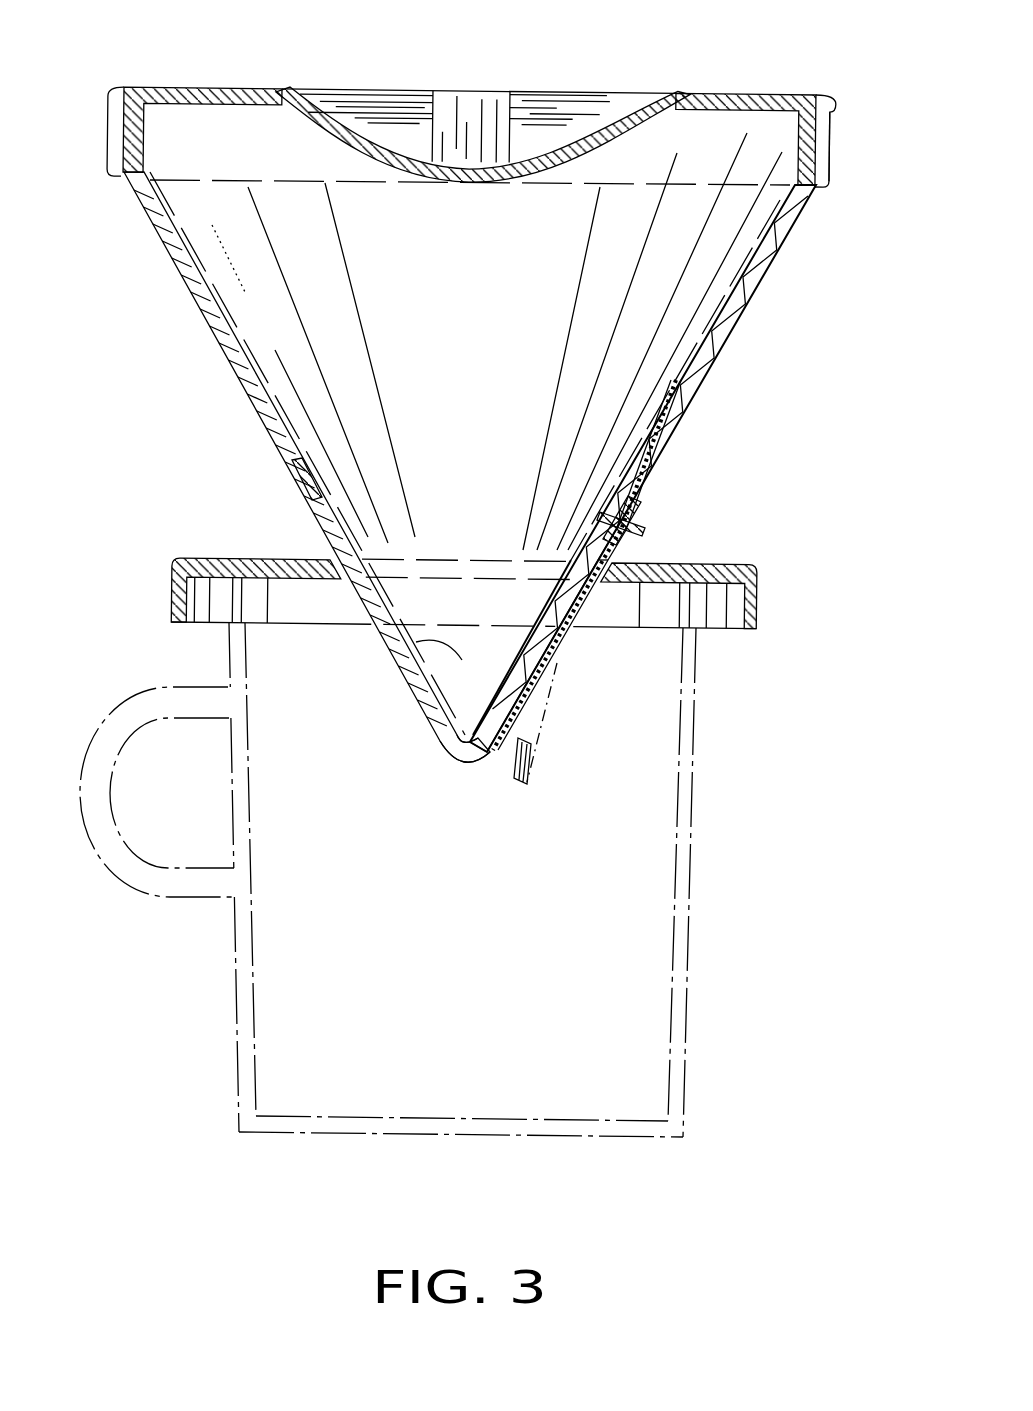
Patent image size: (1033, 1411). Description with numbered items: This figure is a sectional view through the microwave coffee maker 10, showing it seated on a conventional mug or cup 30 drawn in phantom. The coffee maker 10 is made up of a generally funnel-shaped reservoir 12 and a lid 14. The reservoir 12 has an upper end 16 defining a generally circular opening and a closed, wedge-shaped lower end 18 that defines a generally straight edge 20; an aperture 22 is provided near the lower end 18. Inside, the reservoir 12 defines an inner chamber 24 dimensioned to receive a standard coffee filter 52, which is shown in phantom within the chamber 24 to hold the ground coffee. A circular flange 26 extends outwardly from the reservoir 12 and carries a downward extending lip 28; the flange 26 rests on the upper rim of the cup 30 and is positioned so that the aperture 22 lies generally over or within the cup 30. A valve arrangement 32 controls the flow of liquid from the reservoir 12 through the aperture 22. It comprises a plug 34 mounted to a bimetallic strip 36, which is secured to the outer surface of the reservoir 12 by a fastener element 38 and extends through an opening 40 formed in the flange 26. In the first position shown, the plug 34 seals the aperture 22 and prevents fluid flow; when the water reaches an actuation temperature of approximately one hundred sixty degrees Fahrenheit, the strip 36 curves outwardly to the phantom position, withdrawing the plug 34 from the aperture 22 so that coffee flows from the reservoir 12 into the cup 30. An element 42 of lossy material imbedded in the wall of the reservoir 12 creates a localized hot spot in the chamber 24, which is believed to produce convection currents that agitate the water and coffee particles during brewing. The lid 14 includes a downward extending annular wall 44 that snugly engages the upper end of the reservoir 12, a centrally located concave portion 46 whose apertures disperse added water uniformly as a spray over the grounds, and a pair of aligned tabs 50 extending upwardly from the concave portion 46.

The microwave coffee maker 10 is at (789, 340).
The reservoir 12 is at (212, 333).
The lid 14 is at (173, 87).
The upper end 16 is at (720, 133).
The lower end 18 is at (400, 680).
The straight edge 20 is at (458, 768).
The aperture 22 is at (442, 708).
The inner chamber 24 is at (480, 353).
The circular flange 26 is at (235, 558).
The lip 28 is at (172, 578).
The cup 30 is at (232, 962).
The valve arrangement 32 is at (508, 780).
The plug 34 is at (488, 770).
The bimetallic strip 36 is at (565, 658).
The fastener element 38 is at (642, 533).
The opening 40 is at (615, 555).
The element 42 is at (290, 481).
The annular wall 44 is at (831, 122).
The concave portion 46 is at (465, 180).
The tabs 50 is at (373, 108).
The coffee filter 52 is at (248, 178).